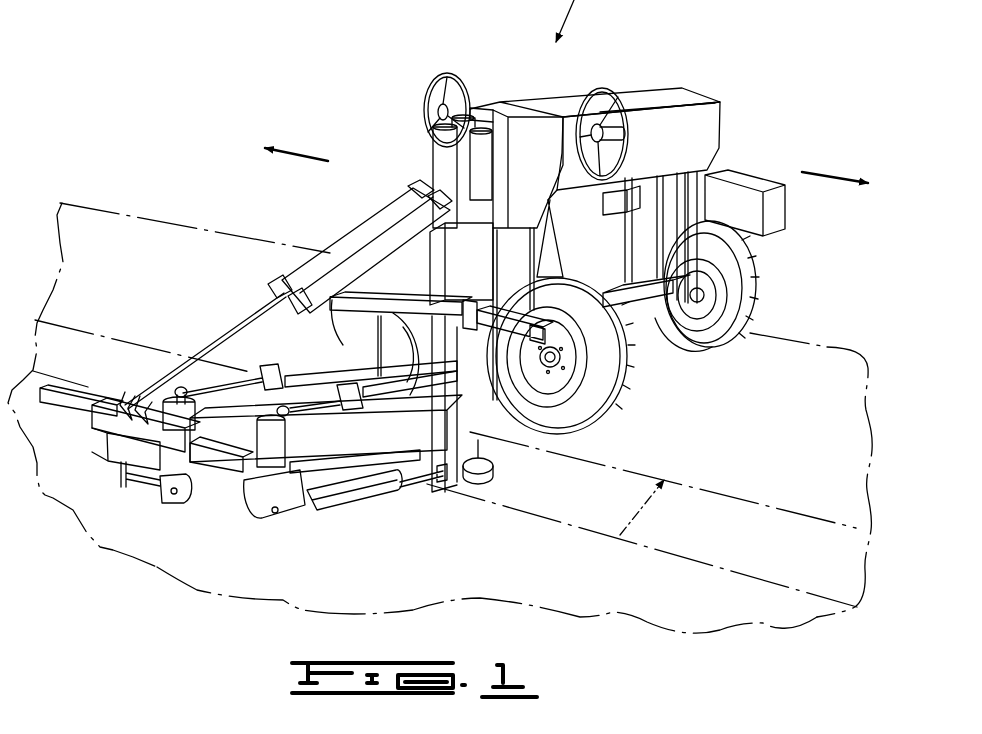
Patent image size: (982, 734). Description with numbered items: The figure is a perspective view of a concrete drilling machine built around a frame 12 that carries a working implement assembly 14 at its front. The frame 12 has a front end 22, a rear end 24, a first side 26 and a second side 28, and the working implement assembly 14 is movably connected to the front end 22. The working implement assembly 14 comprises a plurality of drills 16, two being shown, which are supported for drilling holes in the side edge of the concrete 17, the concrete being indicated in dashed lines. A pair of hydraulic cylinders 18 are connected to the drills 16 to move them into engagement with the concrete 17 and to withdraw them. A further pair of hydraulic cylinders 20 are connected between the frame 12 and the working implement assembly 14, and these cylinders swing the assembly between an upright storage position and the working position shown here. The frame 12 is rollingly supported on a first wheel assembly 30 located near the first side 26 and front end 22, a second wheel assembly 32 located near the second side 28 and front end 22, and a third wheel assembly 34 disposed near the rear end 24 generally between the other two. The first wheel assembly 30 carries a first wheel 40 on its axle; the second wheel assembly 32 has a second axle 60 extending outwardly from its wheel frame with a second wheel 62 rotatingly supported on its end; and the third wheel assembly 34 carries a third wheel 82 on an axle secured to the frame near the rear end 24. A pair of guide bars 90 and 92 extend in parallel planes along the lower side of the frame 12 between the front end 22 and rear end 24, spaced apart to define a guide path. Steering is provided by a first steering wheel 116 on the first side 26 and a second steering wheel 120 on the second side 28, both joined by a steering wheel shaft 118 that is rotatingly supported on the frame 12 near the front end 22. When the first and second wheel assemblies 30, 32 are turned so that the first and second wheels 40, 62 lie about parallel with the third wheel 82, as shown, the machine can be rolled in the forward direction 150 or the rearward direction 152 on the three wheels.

The frame 12 is at (641, 88).
The working implement assembly 14 is at (341, 525).
The drills 16 is at (415, 487).
The concrete 17 is at (618, 538).
The hydraulic cylinders 18 is at (414, 397).
The hydraulic cylinders 20 is at (337, 241).
The front end 22 is at (520, 148).
The rear end 24 is at (730, 105).
The first side 26 is at (682, 130).
The second side 28 is at (541, 93).
The first wheel assembly 30 is at (612, 383).
The second wheel assembly 32 is at (316, 324).
The third wheel assembly 34 is at (760, 265).
The first wheel 40 is at (618, 367).
The second axle 60 is at (548, 365).
The second wheel 62 is at (322, 356).
The third wheel 82 is at (754, 313).
The guide bar 90 is at (655, 335).
The guide bar 92 is at (650, 283).
The first steering wheel 116 is at (625, 123).
The steering wheel shaft 118 is at (623, 148).
The second steering wheel 120 is at (452, 72).
The forward direction 150 is at (834, 174).
The rearward direction 152 is at (302, 151).